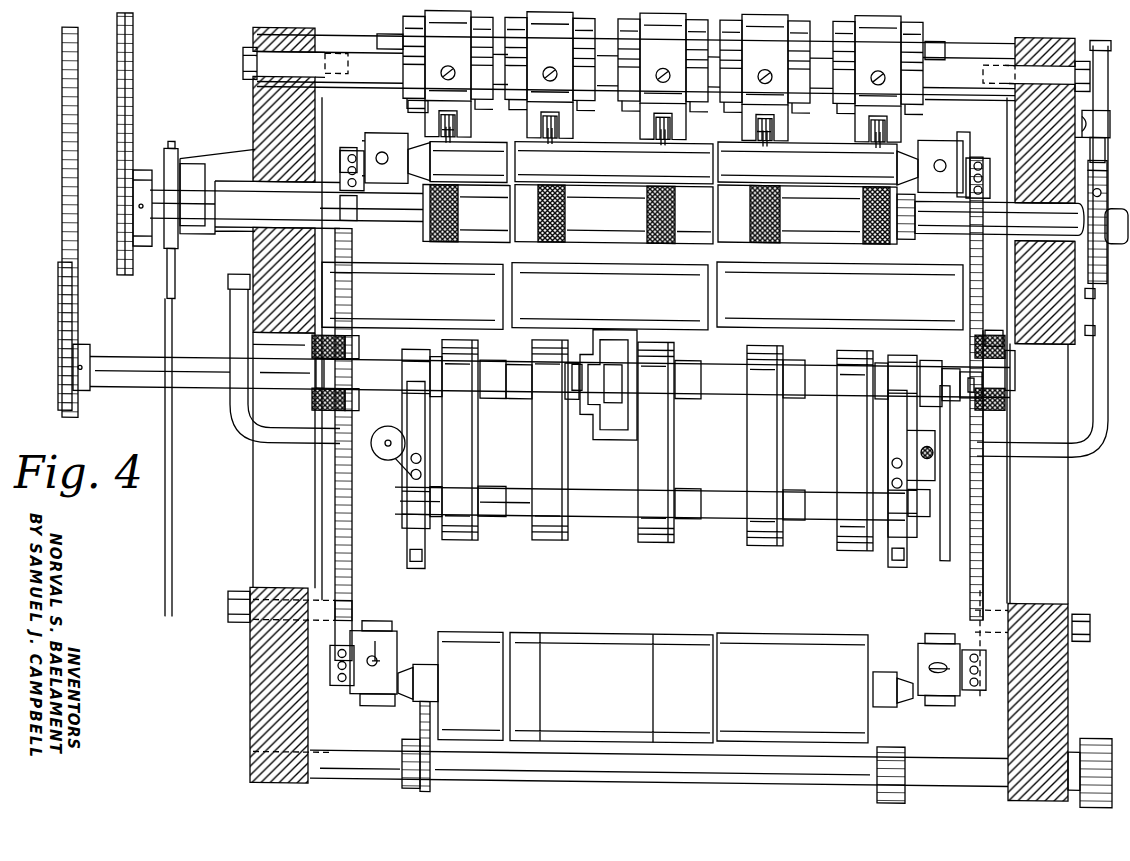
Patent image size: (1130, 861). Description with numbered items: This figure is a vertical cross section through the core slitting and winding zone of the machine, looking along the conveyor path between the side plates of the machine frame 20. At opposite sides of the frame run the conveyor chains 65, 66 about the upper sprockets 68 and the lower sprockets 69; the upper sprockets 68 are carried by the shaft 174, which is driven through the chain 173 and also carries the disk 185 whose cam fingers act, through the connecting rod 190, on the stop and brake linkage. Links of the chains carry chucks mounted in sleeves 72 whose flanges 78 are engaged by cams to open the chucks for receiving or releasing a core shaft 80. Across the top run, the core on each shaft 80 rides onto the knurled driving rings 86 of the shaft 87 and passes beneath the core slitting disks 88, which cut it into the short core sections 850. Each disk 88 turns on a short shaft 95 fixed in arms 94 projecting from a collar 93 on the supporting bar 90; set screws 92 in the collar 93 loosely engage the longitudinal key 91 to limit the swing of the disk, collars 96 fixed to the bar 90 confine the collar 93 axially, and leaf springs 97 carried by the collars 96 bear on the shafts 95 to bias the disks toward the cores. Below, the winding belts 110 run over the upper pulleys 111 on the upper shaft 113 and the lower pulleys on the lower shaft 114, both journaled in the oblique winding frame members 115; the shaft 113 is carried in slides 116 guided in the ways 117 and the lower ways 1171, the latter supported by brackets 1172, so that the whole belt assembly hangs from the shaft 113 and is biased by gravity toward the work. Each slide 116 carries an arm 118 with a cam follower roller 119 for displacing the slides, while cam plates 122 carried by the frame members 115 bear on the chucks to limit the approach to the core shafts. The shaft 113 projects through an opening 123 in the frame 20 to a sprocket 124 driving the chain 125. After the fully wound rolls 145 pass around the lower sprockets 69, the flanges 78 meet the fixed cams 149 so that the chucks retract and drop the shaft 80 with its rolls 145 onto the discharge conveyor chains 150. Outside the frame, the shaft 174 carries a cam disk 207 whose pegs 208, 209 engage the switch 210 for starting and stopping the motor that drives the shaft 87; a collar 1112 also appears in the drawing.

The machine frame 20 is at (1050, 700).
The chain 65 is at (978, 158).
The chain 66 is at (340, 148).
The upper sprocket 68 is at (352, 240).
The lower sprocket 69 is at (352, 575).
The sleeve 72 is at (935, 140).
The flange 78 is at (366, 130).
The core shaft 80 is at (420, 672).
The knurled driving ring 86 is at (650, 208).
The shaft 87 is at (962, 220).
The core slitting disk 88 is at (662, 146).
The supporting bar 90 is at (968, 50).
The longitudinal key 91 is at (937, 40).
The set screw 92 is at (448, 64).
The collar 93 is at (456, 25).
The arm 94 is at (772, 126).
The shaft 95 is at (455, 124).
The collar 96 is at (412, 24).
The leaf spring 97 is at (412, 99).
The winding belt 110 is at (545, 448).
The upper pulley 111 is at (530, 352).
The upper shaft 113 is at (480, 385).
The lower shaft 114 is at (488, 500).
The winding frame member 115 is at (420, 432).
The slide 116 is at (350, 330).
The way 117 is at (355, 318).
The arm 118 is at (998, 452).
The cam follower roller 119 is at (1000, 385).
The cam plate 122 is at (405, 540).
The opening 123 is at (270, 343).
The sprocket 124 is at (78, 350).
The chain 125 is at (72, 304).
The fully wound roll 145 is at (685, 646).
The fixed cam 149 is at (385, 620).
The discharge conveyor chain 150 is at (418, 745).
The chain 173 is at (128, 138).
The shaft 174 is at (232, 215).
The disk 185 is at (176, 248).
The connecting rod 190 is at (165, 298).
The cam disk 207 is at (1080, 200).
The peg 208 is at (1095, 188).
The peg 209 is at (1090, 175).
The switch 210 is at (1090, 158).
The core section 850 is at (782, 184).
The collar 1112 is at (535, 470).
The lower way 1171 is at (270, 440).
The bracket 1172 is at (258, 462).